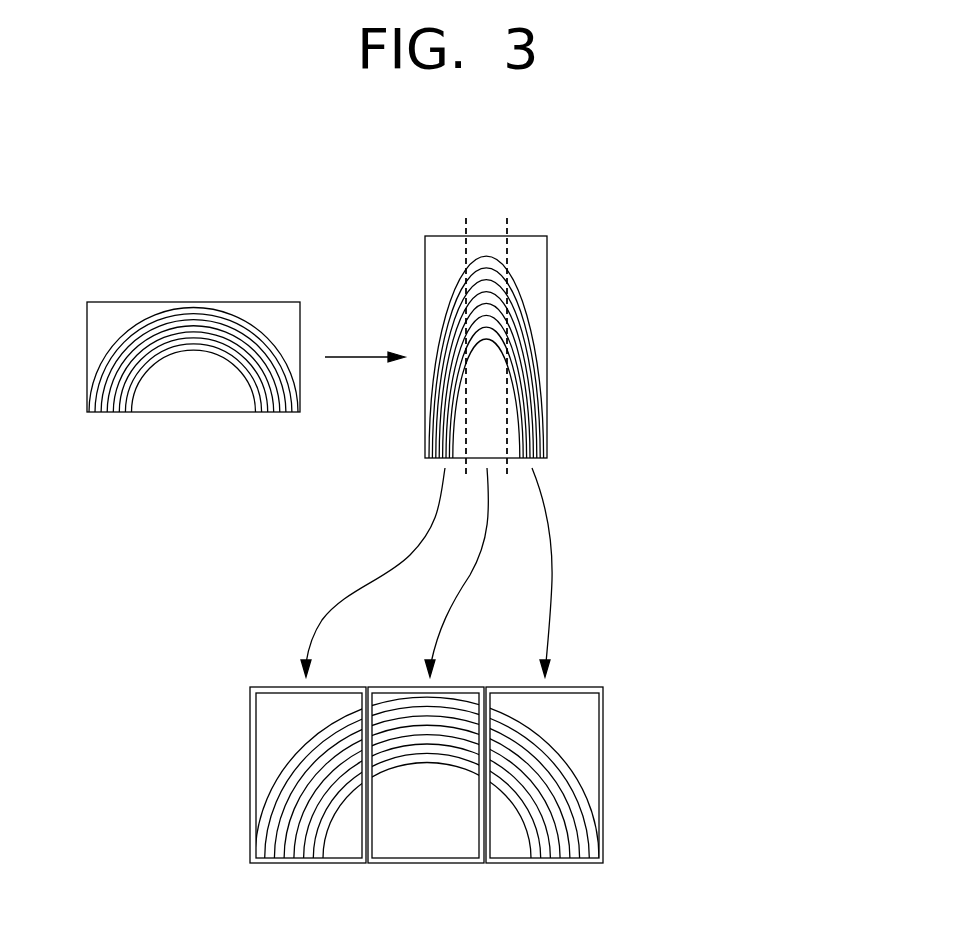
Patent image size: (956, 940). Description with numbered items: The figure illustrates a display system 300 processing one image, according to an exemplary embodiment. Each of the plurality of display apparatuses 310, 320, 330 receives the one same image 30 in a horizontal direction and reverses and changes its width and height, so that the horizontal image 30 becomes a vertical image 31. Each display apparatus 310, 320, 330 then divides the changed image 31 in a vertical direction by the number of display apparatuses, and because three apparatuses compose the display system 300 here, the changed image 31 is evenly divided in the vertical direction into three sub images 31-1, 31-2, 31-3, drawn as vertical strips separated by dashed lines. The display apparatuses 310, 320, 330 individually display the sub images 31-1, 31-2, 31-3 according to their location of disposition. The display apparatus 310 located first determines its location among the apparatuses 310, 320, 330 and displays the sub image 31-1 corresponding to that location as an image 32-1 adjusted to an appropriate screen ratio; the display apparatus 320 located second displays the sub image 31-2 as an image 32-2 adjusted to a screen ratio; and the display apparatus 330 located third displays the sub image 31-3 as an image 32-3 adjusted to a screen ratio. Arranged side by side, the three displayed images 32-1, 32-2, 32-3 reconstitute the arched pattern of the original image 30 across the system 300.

The display system 300 is at (485, 144).
The horizontal image 30 is at (114, 302).
The vertical image 31 is at (492, 335).
The first sub image 31-1 is at (446, 248).
The second sub image 31-2 is at (483, 248).
The third sub image 31-3 is at (530, 248).
The first display apparatus 310 is at (392, 749).
The second display apparatus 320 is at (427, 768).
The third display apparatus 330 is at (429, 768).
The first displayed image 32-1 is at (267, 745).
The second displayed image 32-2 is at (420, 840).
The third displayed image 32-3 is at (506, 840).